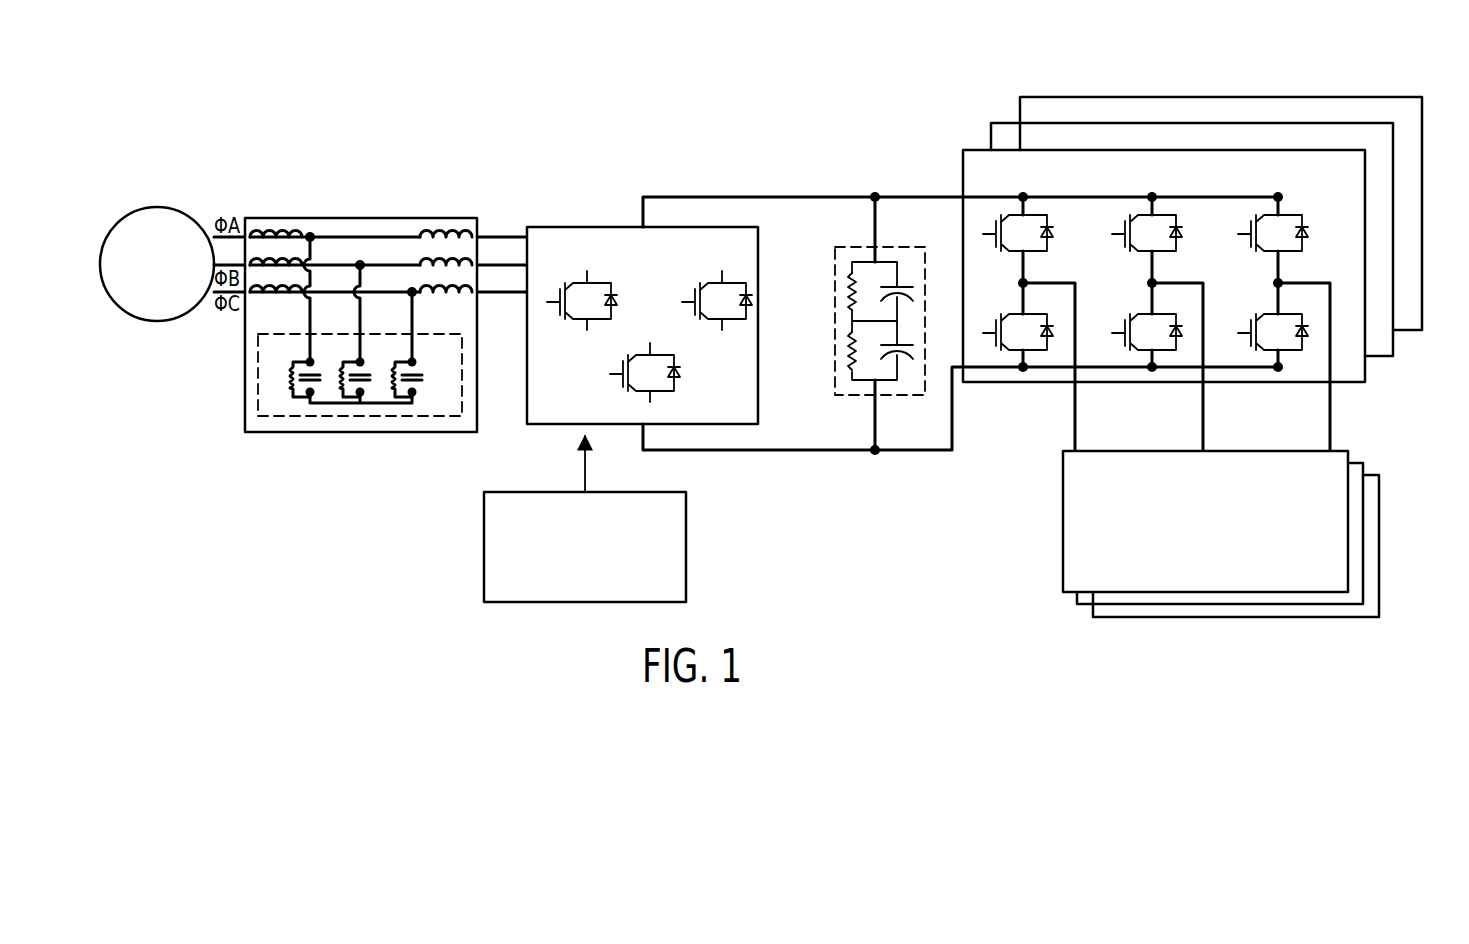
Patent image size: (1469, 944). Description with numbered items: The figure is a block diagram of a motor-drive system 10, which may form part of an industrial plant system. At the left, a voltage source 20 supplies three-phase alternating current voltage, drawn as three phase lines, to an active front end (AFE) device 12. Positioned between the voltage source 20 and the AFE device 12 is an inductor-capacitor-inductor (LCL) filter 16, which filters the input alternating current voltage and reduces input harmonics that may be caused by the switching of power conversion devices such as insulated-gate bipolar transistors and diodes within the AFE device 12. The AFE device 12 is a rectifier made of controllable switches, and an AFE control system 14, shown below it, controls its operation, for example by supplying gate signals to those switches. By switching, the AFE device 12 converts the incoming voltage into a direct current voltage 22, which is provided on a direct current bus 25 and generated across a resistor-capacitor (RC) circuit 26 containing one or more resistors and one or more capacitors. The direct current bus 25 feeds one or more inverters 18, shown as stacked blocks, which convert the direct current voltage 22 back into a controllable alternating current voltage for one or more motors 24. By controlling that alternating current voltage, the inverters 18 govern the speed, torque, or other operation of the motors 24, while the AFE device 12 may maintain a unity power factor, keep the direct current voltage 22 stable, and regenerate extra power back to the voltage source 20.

The motor-drive system 10 is at (645, 78).
The active front end (AFE) device 12 is at (585, 227).
The AFE control system 14 is at (686, 520).
The inductor-capacitor-inductor (LCL) filter 16 is at (358, 218).
The inverters 18 is at (1428, 183).
The voltage source 20 is at (134, 212).
The DC voltage 22 is at (798, 282).
The motors 24 is at (1357, 453).
The DC bus 25 is at (853, 184).
The resistor-capacitor (RC) circuit 26 is at (915, 255).